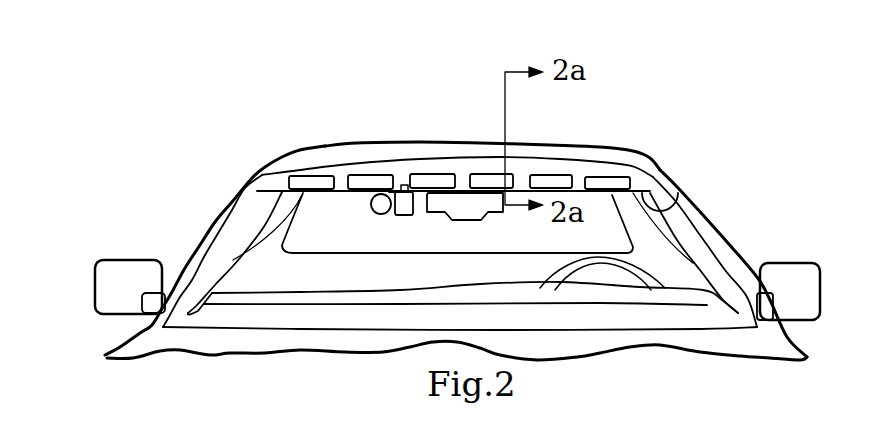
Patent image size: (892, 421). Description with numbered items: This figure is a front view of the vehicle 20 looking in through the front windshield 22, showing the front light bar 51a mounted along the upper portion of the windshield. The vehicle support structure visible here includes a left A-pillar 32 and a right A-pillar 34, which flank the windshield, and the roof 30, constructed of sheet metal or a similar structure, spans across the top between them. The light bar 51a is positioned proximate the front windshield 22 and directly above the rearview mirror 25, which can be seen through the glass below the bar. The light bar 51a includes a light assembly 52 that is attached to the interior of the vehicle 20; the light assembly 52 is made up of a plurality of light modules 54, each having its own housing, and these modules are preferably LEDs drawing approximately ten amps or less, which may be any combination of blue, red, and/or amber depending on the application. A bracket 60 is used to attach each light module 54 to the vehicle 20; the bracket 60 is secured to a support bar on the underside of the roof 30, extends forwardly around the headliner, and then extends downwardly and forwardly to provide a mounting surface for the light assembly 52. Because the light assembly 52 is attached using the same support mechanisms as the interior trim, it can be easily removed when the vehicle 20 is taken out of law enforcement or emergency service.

The vehicle 20 is at (673, 130).
The front windshield 22 is at (382, 243).
The rearview mirror 25 is at (467, 215).
The roof 30 is at (523, 142).
The left A-pillar 32 is at (728, 237).
The right A-pillar 34 is at (215, 218).
The light bar 51a is at (450, 150).
The light assembly 52 is at (463, 165).
The light modules 54 is at (298, 182).
The bracket 60 is at (688, 202).